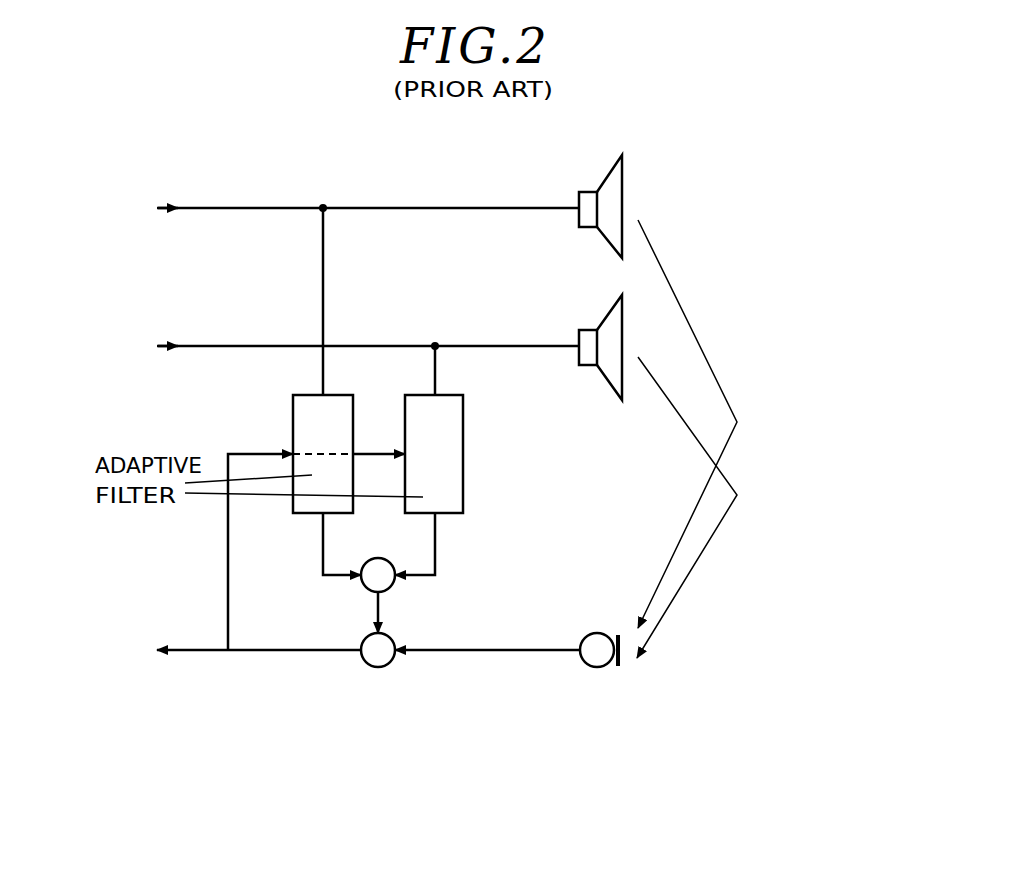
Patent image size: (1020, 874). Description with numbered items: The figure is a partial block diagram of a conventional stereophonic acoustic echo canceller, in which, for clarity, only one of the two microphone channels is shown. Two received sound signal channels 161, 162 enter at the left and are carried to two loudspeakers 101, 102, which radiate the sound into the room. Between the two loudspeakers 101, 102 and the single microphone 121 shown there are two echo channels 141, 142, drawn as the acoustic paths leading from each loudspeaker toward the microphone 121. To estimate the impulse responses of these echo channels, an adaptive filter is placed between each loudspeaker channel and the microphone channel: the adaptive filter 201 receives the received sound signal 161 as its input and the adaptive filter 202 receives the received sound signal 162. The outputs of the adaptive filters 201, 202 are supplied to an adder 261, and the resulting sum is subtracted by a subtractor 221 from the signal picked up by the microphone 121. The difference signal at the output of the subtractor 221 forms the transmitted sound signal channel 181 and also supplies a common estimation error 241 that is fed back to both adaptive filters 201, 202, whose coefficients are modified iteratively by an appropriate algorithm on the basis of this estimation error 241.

The loudspeaker 101 is at (614, 168).
The loudspeaker 102 is at (613, 307).
The microphone 121 is at (598, 667).
The echo channel 141 is at (692, 327).
The echo channel 142 is at (728, 508).
The received sound signal channel 161 is at (203, 207).
The received sound signal channel 162 is at (208, 346).
The transmitted sound signal channel 181 is at (185, 655).
The adaptive filter 201 is at (300, 408).
The adaptive filter 202 is at (455, 442).
The subtractor 221 is at (380, 667).
The estimation error 241 is at (228, 553).
The adder 261 is at (385, 582).